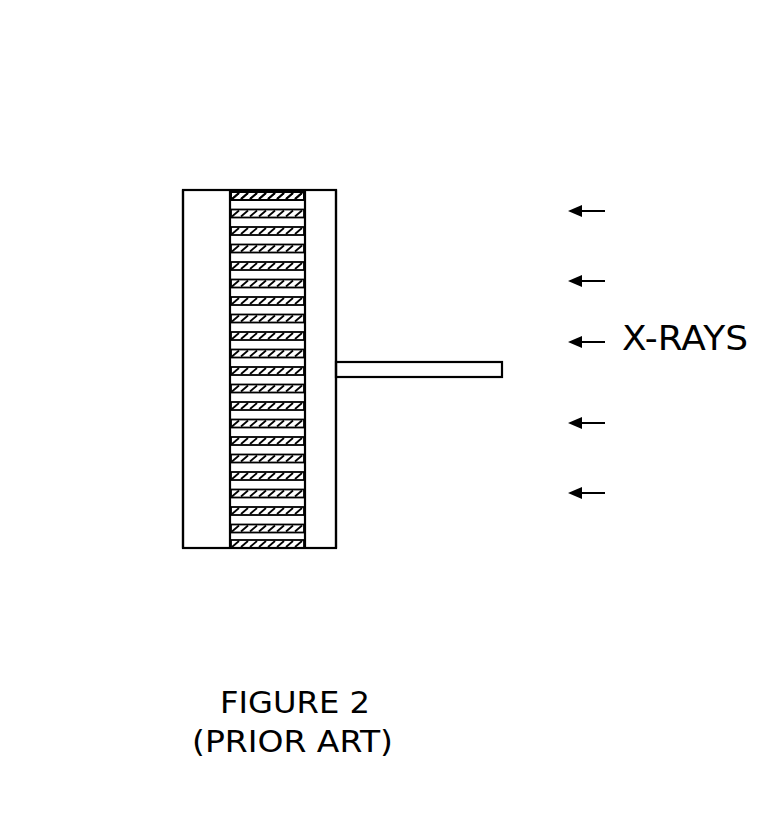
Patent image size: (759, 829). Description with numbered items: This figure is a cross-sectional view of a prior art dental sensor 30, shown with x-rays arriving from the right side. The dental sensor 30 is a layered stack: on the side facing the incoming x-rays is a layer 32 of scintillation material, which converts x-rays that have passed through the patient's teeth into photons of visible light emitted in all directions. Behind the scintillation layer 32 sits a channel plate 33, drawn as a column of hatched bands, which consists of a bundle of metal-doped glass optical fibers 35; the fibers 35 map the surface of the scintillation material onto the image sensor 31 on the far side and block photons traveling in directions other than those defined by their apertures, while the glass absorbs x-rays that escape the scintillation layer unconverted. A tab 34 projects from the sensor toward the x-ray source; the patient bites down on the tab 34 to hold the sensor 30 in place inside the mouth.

The dental sensor 30 is at (176, 100).
The image sensor 31 is at (193, 363).
The layer of scintillation material 32 is at (322, 537).
The channel plate 33 is at (268, 548).
The tab 34 is at (482, 368).
The optical fibers 35 is at (288, 193).